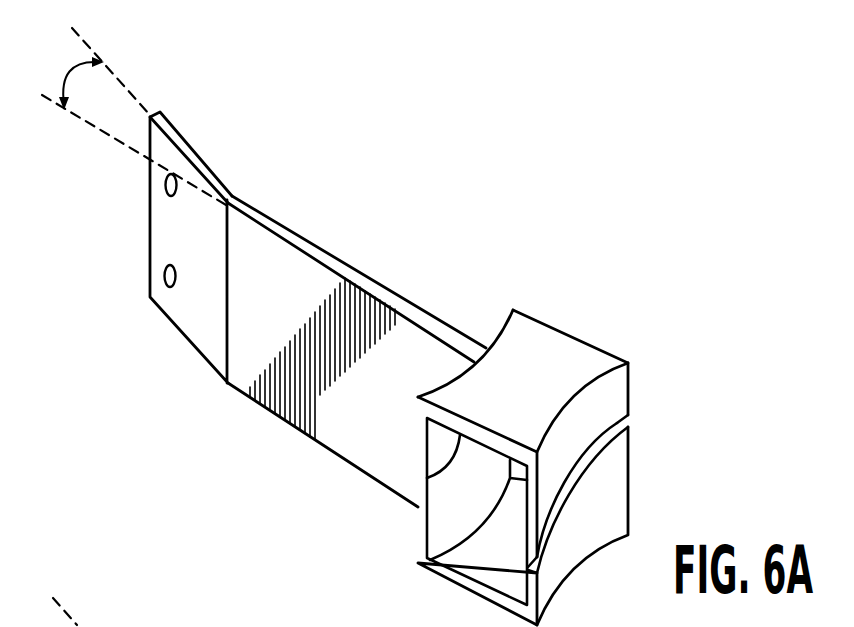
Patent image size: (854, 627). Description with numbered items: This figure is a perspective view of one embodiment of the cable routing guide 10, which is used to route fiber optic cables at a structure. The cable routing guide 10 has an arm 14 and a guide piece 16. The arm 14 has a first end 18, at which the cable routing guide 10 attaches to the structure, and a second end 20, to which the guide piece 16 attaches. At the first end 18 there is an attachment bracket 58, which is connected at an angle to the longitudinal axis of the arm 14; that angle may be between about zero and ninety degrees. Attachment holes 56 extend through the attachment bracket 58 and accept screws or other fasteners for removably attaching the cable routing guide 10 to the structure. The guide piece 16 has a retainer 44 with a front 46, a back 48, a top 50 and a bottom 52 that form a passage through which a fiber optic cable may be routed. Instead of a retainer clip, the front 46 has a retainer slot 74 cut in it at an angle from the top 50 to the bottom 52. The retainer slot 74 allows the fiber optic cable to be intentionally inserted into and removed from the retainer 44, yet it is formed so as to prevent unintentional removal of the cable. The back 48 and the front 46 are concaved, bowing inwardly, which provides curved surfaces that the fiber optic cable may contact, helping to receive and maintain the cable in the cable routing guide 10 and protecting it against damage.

The cable routing guide 10 is at (556, 245).
The arm 14 is at (383, 290).
The guide piece 16 is at (550, 325).
The first end 18 is at (197, 145).
The second end 20 is at (493, 342).
The retainer 44 is at (598, 345).
The front 46 is at (629, 381).
The back 48 is at (447, 497).
The top 50 is at (427, 480).
The bottom 52 is at (473, 567).
The attachment holes 56 is at (165, 185).
The attachment bracket 58 is at (173, 125).
The retainer slot 74 is at (599, 443).